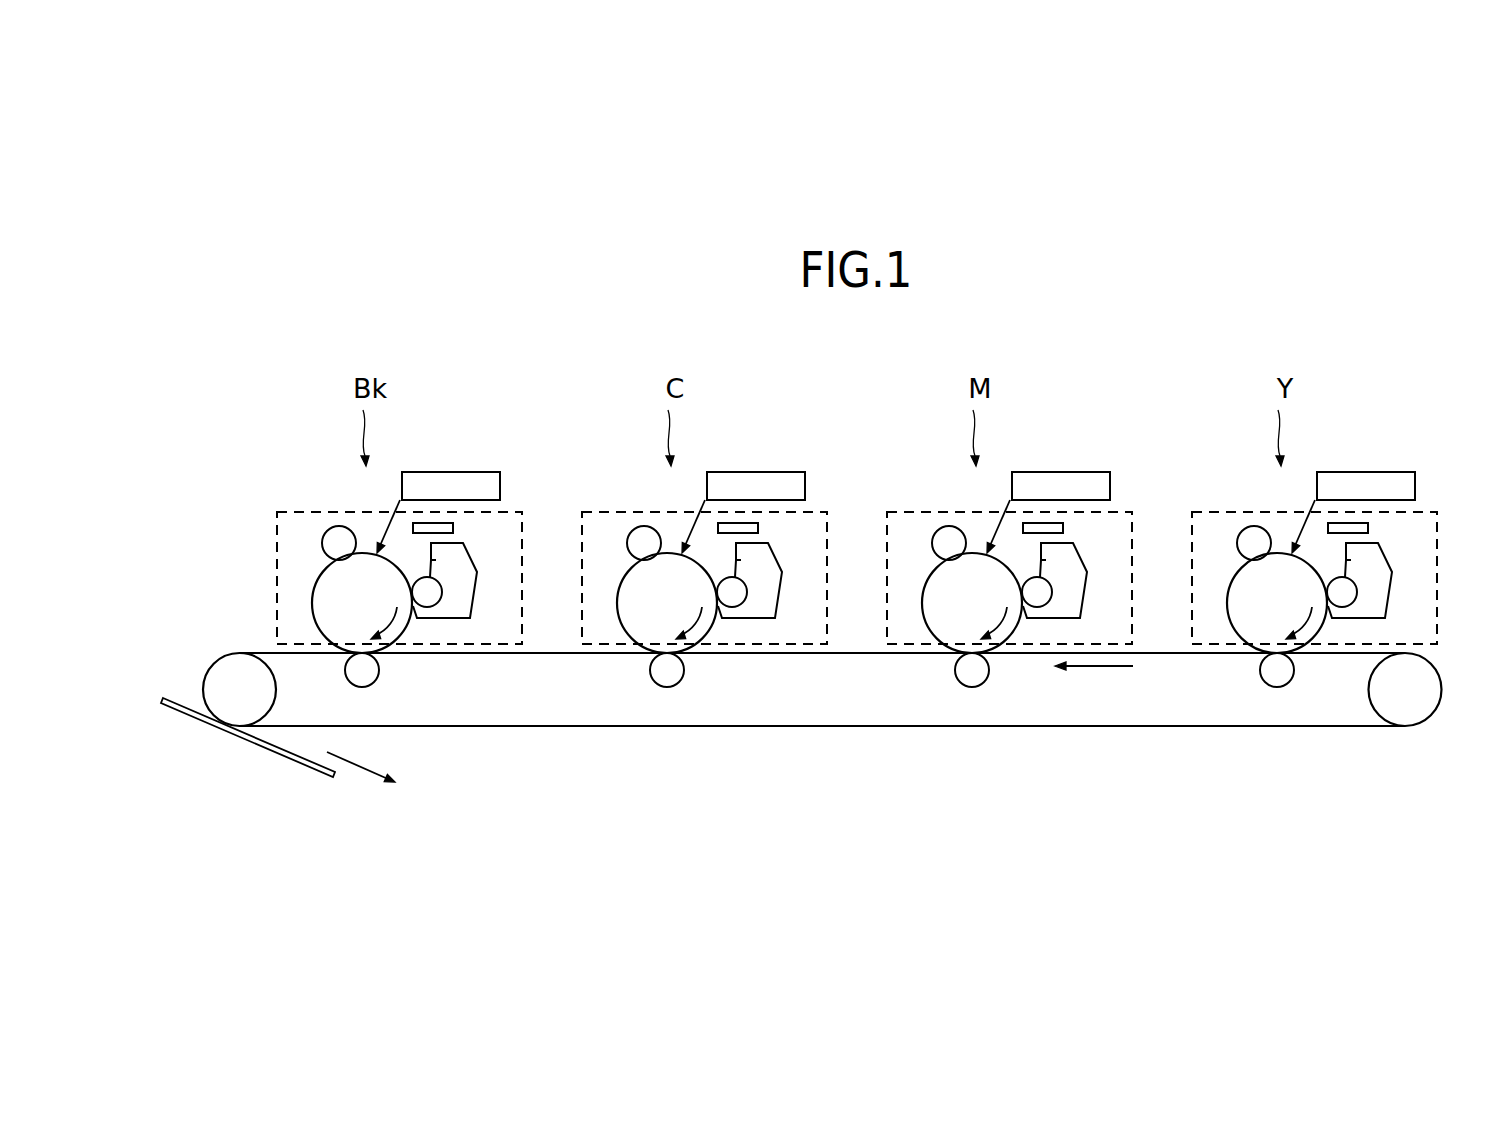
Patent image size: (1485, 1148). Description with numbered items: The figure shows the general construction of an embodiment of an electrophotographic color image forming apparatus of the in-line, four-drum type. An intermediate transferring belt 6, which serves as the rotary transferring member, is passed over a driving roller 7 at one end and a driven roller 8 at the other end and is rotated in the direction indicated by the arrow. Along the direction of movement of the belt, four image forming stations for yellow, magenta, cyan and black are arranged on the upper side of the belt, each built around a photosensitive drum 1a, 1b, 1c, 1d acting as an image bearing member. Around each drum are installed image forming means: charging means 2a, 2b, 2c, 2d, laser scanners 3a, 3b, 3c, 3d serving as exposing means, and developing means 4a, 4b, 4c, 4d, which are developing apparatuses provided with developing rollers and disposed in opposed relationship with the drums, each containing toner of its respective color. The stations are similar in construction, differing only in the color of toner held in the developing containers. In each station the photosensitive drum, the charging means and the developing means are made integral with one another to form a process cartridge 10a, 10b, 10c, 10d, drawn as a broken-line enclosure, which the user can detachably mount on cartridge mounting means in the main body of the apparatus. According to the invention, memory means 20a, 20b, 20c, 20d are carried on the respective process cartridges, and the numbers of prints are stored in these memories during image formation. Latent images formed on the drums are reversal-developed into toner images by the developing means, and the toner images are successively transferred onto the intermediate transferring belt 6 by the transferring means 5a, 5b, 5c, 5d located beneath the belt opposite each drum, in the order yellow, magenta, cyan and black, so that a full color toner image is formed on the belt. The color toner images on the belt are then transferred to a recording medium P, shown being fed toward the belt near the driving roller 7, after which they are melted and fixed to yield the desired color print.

The photosensitive drum 1a is at (1231, 578).
The photosensitive drum 1b is at (926, 578).
The photosensitive drum 1c is at (621, 578).
The photosensitive drum 1d is at (316, 578).
The charging means 2a is at (1248, 527).
The charging means 2b is at (943, 527).
The charging means 2c is at (638, 527).
The charging means 2d is at (333, 527).
The laser scanner 3a is at (1330, 472).
The laser scanner 3b is at (1025, 472).
The laser scanner 3c is at (720, 472).
The laser scanner 3d is at (415, 472).
The developing means 4a is at (1389, 565).
The developing means 4b is at (1084, 565).
The developing means 4c is at (779, 565).
The developing means 4d is at (474, 565).
The transferring means 5a is at (1260, 677).
The transferring means 5b is at (955, 677).
The transferring means 5c is at (650, 677).
The transferring means 5d is at (345, 677).
The intermediate transferring belt 6 is at (1303, 727).
The driving roller 7 is at (230, 667).
The driven roller 8 is at (1411, 711).
The process cartridge 10a is at (1436, 513).
The process cartridge 10b is at (1131, 513).
The process cartridge 10c is at (826, 513).
The process cartridge 10d is at (521, 513).
The memory means 20a is at (1355, 523).
The memory means 20b is at (1050, 523).
The memory means 20c is at (745, 523).
The memory means 20d is at (440, 523).
The recording medium P is at (181, 708).